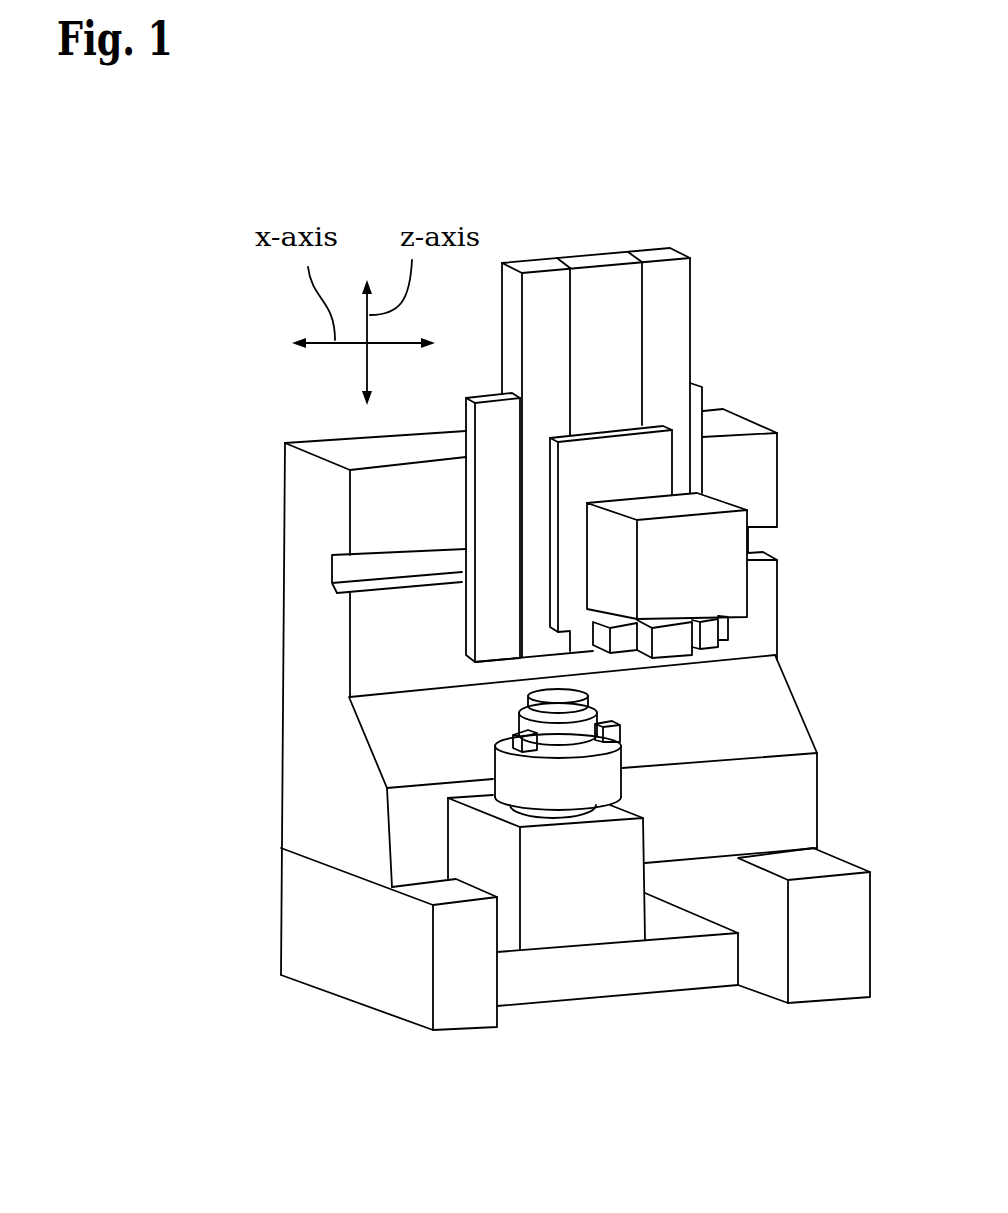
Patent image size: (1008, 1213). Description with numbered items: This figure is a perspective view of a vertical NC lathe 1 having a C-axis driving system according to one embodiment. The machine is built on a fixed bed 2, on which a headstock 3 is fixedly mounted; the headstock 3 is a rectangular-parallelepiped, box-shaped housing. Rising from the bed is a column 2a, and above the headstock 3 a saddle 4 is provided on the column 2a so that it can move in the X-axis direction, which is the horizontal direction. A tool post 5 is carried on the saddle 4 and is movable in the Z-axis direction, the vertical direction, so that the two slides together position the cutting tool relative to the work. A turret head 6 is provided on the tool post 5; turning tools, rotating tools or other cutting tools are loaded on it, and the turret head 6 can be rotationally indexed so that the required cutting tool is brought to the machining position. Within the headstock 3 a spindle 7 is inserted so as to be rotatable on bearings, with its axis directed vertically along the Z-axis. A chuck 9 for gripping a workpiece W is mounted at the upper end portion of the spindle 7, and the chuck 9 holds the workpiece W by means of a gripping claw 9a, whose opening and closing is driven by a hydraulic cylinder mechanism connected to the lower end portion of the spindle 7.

The vertical NC lathe 1 is at (838, 365).
The fixed bed 2 is at (272, 906).
The column 2a is at (262, 595).
The headstock 3 is at (657, 921).
The saddle 4 is at (688, 313).
The tool post 5 is at (778, 493).
The turret head 6 is at (728, 627).
The spindle 7 is at (588, 817).
The chuck 9 is at (623, 782).
The gripping claw 9a is at (512, 735).
The workpiece W is at (600, 708).